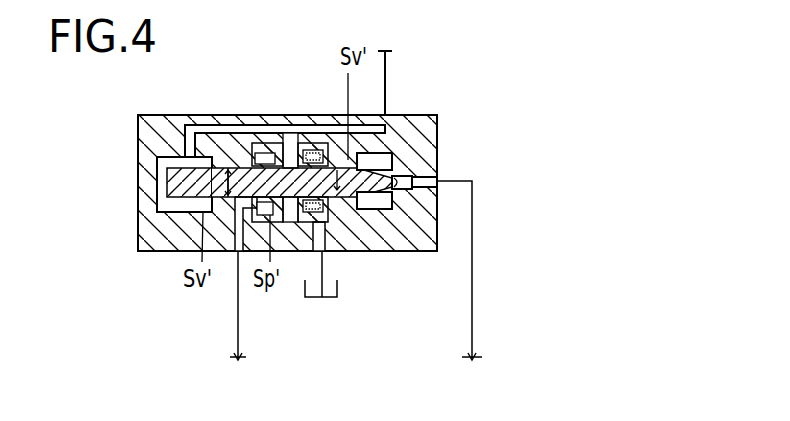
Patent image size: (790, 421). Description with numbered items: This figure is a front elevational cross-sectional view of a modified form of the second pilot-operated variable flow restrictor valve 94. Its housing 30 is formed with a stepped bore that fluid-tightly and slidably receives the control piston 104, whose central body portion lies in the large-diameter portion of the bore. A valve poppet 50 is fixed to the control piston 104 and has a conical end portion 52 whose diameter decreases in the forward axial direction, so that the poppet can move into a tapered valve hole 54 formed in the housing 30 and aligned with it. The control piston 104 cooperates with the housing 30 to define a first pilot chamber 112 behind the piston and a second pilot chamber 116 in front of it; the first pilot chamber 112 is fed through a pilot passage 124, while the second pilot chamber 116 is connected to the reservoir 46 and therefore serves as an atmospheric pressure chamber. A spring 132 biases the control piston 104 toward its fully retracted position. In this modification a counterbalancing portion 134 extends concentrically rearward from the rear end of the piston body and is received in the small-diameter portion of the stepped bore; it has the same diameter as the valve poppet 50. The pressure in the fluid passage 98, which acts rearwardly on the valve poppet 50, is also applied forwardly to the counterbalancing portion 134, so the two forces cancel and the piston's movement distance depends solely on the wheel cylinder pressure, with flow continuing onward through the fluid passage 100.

The housing 30 is at (415, 128).
The reservoir 46 is at (326, 300).
The valve poppet 50 is at (368, 210).
The conical end portion 52 is at (388, 205).
The tapered valve hole 54 is at (405, 176).
The second pilot-operated variable flow restrictor valve 94 is at (466, 160).
The fluid passage 98 is at (400, 70).
The fluid passage 100 is at (472, 283).
The control piston 104 is at (295, 163).
The first pilot chamber 112 is at (245, 140).
The second pilot chamber 116 is at (330, 208).
The pilot passage 124 is at (238, 345).
The spring 132 is at (312, 150).
The counterbalancing portion 134 is at (170, 182).